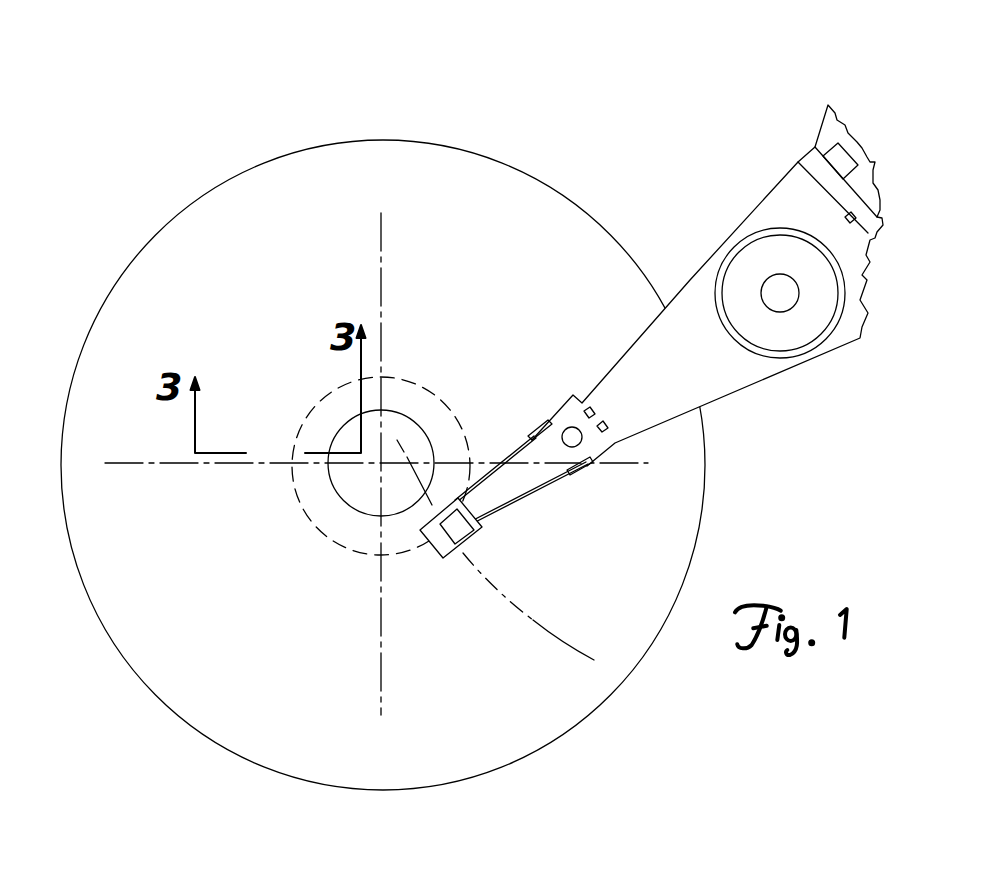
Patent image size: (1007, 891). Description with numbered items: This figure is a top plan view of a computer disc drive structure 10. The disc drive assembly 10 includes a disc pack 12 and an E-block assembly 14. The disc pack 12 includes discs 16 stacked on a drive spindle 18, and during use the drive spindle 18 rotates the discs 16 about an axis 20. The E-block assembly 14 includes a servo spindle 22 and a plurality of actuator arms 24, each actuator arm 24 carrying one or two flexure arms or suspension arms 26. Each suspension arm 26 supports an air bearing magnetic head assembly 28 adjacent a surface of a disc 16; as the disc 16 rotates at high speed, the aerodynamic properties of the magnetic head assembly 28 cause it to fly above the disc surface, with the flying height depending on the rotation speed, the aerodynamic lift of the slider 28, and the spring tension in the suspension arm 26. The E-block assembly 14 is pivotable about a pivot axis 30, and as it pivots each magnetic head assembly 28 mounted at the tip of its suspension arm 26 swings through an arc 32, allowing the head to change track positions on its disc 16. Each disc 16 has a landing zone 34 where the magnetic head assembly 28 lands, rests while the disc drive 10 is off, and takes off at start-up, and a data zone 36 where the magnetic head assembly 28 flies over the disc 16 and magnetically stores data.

The disc drive structure 10 is at (530, 98).
The disc pack 12 is at (128, 234).
The E-block assembly 14 is at (666, 206).
The disc 16 is at (110, 345).
The drive spindle 18 is at (348, 447).
The axis 20 is at (381, 463).
The servo spindle 22 is at (775, 335).
The actuator arm 24 is at (710, 385).
The suspension arm 26 is at (507, 485).
The magnetic head assembly 28 is at (440, 548).
The pivot axis 30 is at (781, 293).
The arc 32 is at (533, 620).
The landing zone 34 is at (396, 385).
The data zone 36 is at (385, 375).